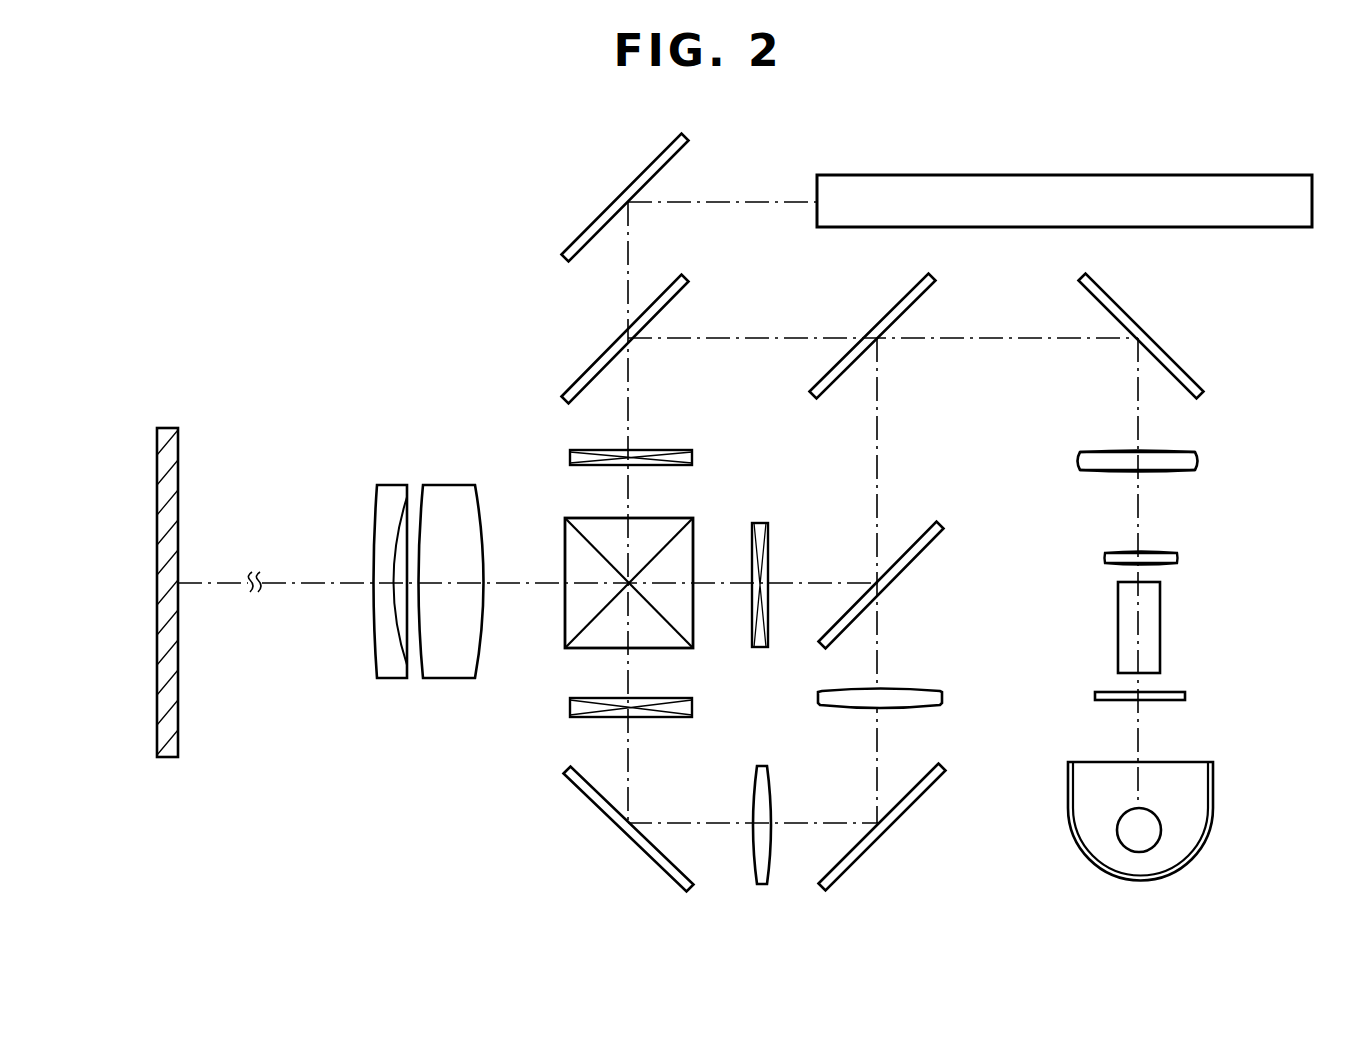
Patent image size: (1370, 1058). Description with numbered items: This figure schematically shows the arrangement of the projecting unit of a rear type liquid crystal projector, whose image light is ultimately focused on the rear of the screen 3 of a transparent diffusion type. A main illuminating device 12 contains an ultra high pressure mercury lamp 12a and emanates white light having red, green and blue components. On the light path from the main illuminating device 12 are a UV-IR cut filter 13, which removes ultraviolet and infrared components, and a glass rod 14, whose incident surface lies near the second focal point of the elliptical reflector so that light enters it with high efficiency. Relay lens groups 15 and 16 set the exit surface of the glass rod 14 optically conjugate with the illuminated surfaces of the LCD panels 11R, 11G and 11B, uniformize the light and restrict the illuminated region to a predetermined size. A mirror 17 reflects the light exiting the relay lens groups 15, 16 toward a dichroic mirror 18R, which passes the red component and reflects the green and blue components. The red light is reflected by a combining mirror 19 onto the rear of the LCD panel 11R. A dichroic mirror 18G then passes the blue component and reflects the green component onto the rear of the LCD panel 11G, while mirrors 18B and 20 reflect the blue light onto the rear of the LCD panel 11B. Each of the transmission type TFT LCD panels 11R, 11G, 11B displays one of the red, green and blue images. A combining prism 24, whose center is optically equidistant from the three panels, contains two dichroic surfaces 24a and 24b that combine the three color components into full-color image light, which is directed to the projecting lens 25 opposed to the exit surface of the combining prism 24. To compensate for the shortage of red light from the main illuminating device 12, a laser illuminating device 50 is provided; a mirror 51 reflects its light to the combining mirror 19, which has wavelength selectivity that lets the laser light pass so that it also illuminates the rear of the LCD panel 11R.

The screen 3 is at (180, 450).
The projecting lens 25 is at (388, 487).
The combining prism 24 is at (591, 534).
The dichroic surface 24a is at (598, 553).
The dichroic surface 24b is at (600, 605).
The LCD panel 11R is at (680, 448).
The LCD panel 11G is at (758, 520).
The LCD panel 11B is at (692, 707).
The mirror 51 is at (595, 188).
The combining mirror 19 is at (602, 352).
The dichroic mirror 18R is at (893, 310).
The mirror 17 is at (1147, 327).
The dichroic mirror 18G is at (900, 578).
The mirror 18B is at (880, 838).
The mirror 20 is at (595, 800).
The laser illuminating device 50 is at (1062, 172).
The relay lens group 16 is at (1078, 462).
The relay lens group 15 is at (1105, 555).
The glass rod 14 is at (1118, 607).
The UV-IR cut filter 13 is at (1110, 690).
The main illuminating device 12 is at (1103, 797).
The ultra high pressure mercury lamp 12a is at (1153, 818).